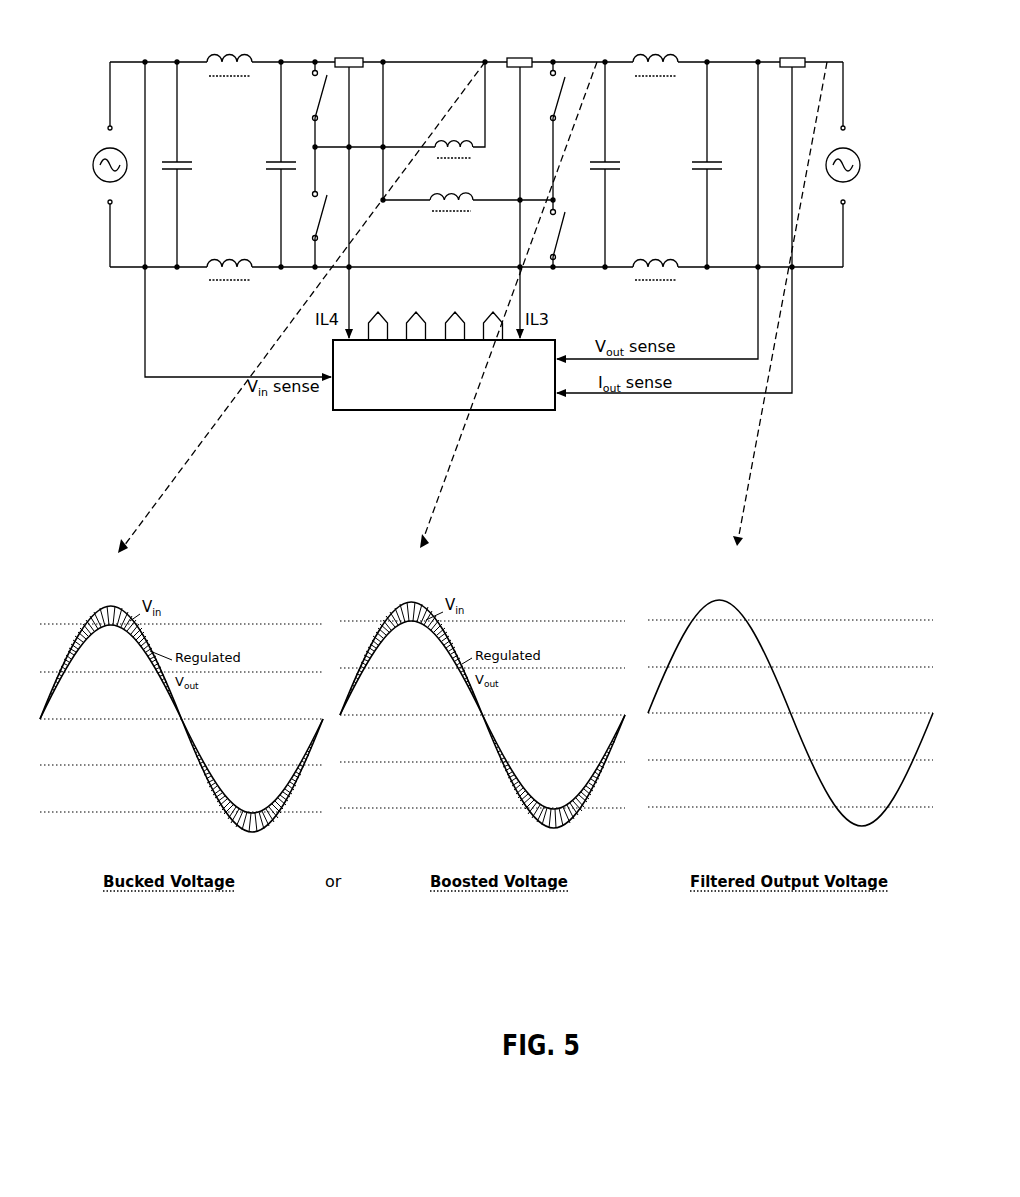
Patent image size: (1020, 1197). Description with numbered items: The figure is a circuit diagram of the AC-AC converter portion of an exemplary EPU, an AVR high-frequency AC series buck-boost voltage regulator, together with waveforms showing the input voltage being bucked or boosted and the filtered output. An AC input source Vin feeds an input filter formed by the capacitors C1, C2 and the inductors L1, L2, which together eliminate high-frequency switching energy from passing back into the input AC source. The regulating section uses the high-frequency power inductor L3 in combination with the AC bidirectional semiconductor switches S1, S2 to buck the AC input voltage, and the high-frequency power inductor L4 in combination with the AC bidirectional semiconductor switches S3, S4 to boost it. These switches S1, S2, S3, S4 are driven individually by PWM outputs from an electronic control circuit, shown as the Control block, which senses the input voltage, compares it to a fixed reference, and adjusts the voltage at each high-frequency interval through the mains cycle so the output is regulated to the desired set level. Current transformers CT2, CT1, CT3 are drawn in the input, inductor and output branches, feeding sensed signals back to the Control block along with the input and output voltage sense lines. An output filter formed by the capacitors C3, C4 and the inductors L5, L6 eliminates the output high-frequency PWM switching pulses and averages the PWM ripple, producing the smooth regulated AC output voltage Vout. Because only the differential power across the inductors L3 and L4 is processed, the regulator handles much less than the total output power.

The input filter inductor L1 is at (229, 54).
The input filter inductor L2 is at (229, 259).
The buck power inductor L3 is at (400, 109).
The boost power inductor L4 is at (468, 135).
The output filter inductor L5 is at (655, 54).
The output filter inductor L6 is at (655, 259).
The input filter capacitor C1 is at (193, 164).
The input filter capacitor C2 is at (266, 164).
The output filter capacitor C3 is at (620, 164).
The output filter capacitor C4 is at (692, 164).
The AC bidirectional semiconductor switch S1 is at (308, 103).
The AC bidirectional semiconductor switch S2 is at (308, 208).
The AC bidirectional semiconductor switch S3 is at (546, 130).
The AC bidirectional semiconductor switch S4 is at (571, 234).
The current transformer CT1 is at (521, 50).
The current transformer CT2 is at (349, 50).
The current transformer CT3 is at (791, 50).
The input voltage source Vin is at (96, 164).
The output voltage Vout is at (863, 164).
The control block Control is at (444, 353).